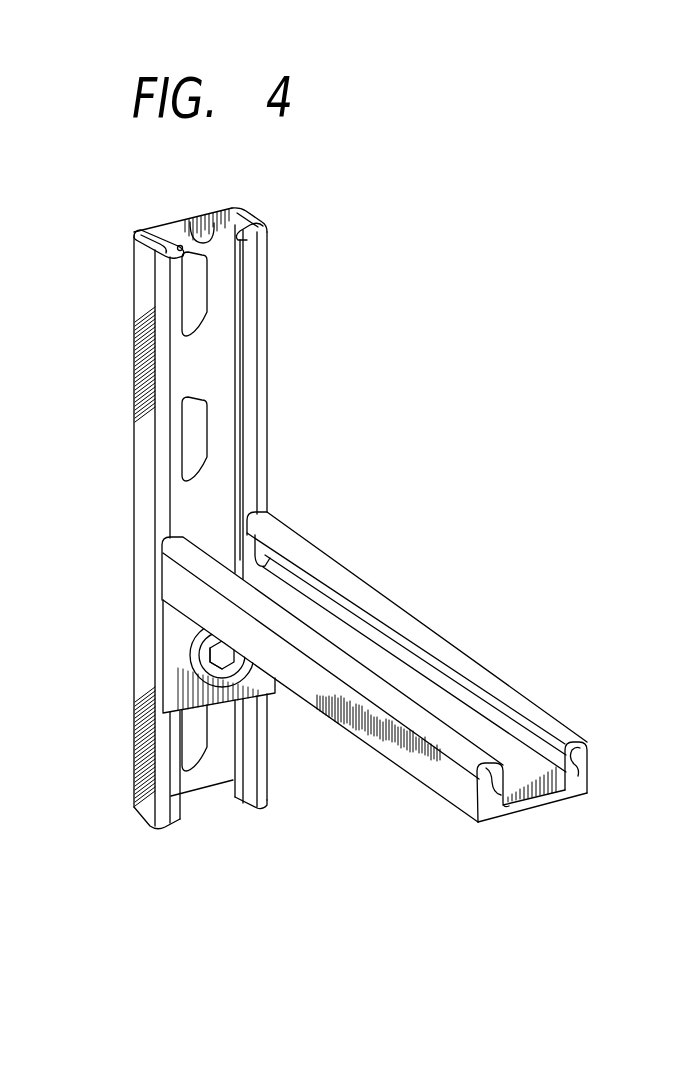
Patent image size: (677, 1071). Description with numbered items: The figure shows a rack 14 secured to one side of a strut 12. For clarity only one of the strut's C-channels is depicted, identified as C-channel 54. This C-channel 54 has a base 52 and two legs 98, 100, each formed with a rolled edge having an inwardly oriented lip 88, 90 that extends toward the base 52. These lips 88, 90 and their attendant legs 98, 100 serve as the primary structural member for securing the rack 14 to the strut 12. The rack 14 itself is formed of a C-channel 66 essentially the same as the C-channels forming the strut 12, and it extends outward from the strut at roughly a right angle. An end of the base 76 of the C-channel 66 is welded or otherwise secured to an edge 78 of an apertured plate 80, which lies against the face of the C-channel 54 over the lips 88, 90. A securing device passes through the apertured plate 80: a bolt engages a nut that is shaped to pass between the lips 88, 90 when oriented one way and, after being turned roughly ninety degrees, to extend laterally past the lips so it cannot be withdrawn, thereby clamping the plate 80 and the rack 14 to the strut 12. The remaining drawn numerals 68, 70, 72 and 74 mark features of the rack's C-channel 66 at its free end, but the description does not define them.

The strut 12 is at (255, 473).
The rack 14 is at (406, 713).
The base 52 is at (214, 211).
The C-channel 54 is at (274, 213).
The C-channel 66 is at (560, 800).
The side wall 68 is at (462, 790).
The inturned lip 70 is at (570, 778).
The channel 72 is at (519, 814).
The side wall 74 is at (590, 792).
The base 76 is at (385, 670).
The edge 78 is at (166, 602).
The apertured plate 80 is at (177, 672).
The inwardly oriented lip 88 is at (182, 222).
The inwardly oriented lip 90 is at (247, 248).
The leg 98 is at (145, 268).
The leg 100 is at (237, 212).